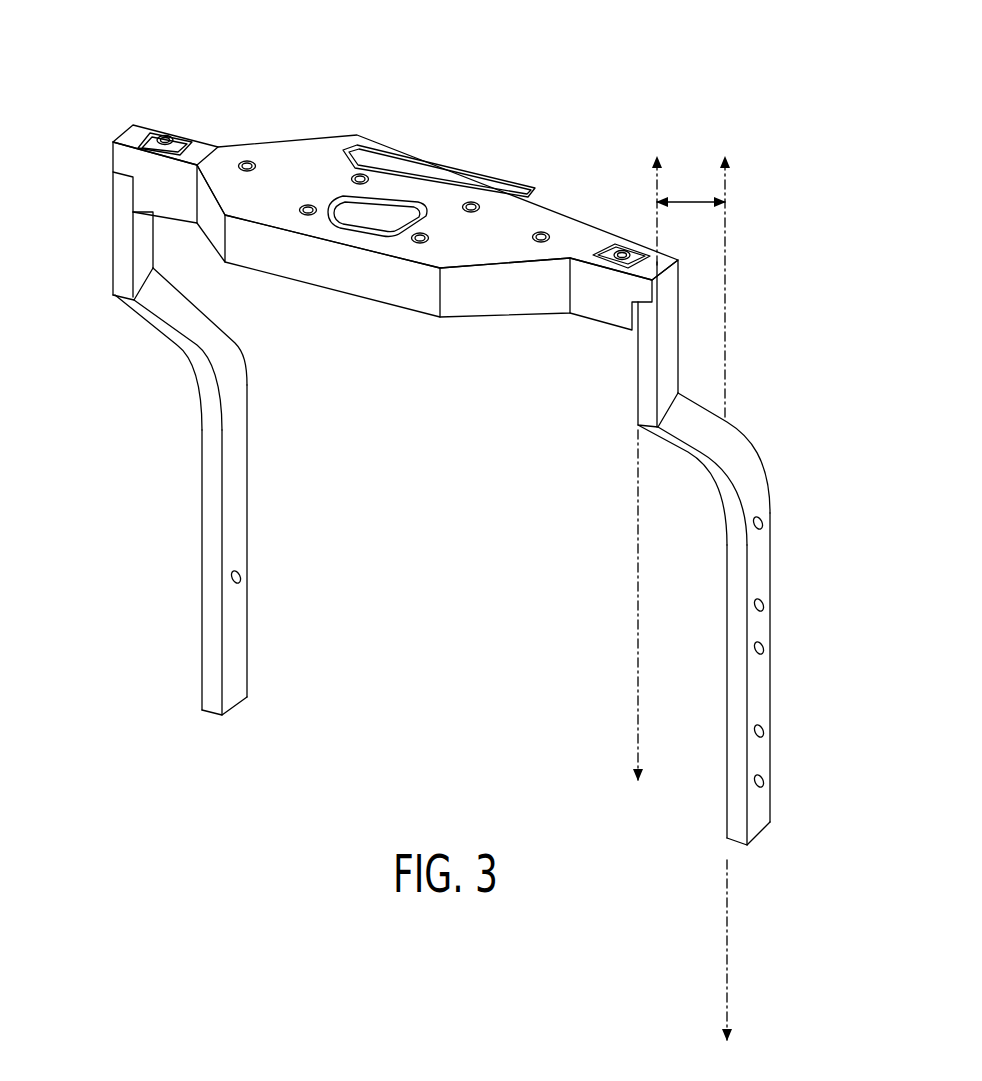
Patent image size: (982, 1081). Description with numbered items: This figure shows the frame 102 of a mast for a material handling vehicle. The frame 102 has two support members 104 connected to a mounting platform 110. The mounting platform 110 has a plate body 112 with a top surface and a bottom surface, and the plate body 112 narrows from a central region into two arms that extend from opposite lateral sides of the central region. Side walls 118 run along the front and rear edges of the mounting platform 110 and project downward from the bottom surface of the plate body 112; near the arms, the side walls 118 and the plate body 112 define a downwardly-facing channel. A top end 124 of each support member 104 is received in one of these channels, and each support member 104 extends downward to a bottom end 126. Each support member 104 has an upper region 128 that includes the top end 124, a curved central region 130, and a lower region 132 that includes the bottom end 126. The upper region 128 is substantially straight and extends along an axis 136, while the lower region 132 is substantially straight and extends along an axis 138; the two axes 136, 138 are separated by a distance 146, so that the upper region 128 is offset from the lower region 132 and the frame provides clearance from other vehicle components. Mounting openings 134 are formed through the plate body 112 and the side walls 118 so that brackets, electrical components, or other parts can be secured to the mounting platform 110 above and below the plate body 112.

The frame 102 is at (648, 110).
The support member 104 is at (218, 466).
The mounting platform 110 is at (295, 155).
The plate body 112 is at (333, 163).
The side wall 118 is at (500, 290).
The top end 124 is at (122, 223).
The bottom end 126 is at (212, 682).
The upper region 128 is at (98, 197).
The central region 130 is at (157, 352).
The lower region 132 is at (180, 578).
The mounting opening 134 is at (471, 205).
The axis 136 is at (637, 592).
The axis 138 is at (725, 237).
The distance 146 is at (695, 200).